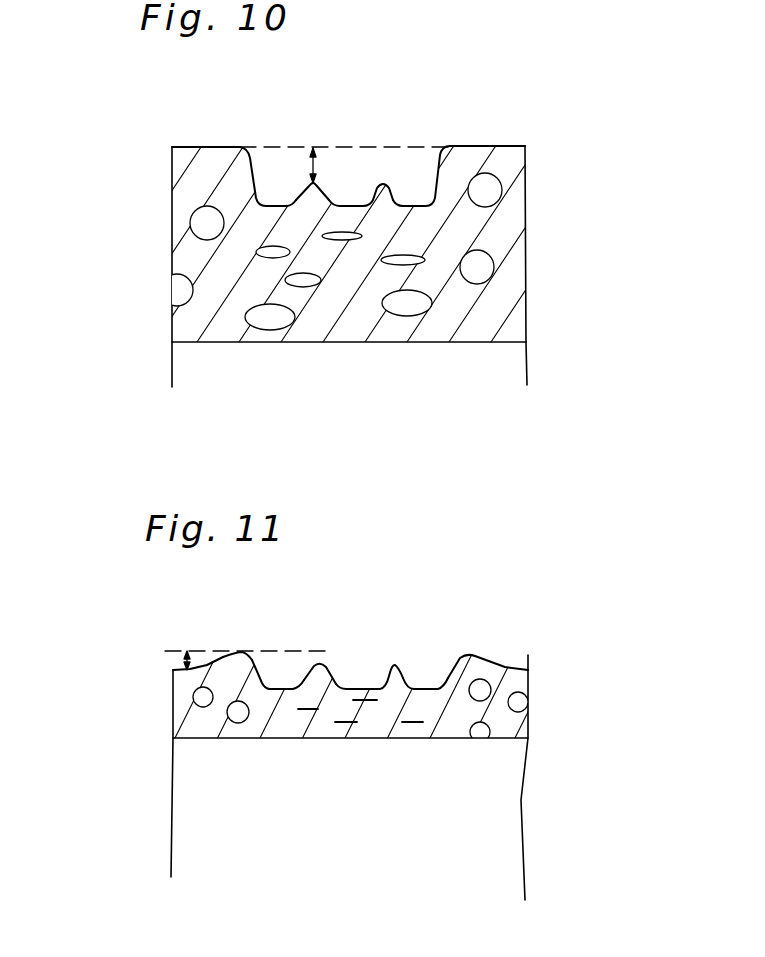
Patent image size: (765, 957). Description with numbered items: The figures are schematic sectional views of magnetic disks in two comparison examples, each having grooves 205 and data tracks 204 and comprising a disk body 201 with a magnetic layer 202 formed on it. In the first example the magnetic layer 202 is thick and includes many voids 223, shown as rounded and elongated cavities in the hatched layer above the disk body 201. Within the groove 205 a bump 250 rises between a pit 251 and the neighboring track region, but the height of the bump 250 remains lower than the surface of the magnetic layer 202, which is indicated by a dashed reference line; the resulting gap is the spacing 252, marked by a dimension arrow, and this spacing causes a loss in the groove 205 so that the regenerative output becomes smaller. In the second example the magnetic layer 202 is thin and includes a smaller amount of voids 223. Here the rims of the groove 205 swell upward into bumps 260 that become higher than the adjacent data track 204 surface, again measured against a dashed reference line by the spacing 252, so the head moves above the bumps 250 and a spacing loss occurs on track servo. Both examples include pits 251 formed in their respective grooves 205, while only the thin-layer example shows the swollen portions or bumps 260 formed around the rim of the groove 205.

In FIG. 10, the disk body 201 is at (185, 360).
In FIG. 11, the disk body 201 is at (193, 813).
In FIG. 10, the magnetic layer 202 is at (193, 172).
In FIG. 11, the magnetic layer 202 is at (193, 683).
In FIG. 10, the data track 204 is at (205, 150).
In FIG. 11, the data track 204 is at (193, 672).
In FIG. 10, the groove 205 is at (278, 168).
In FIG. 11, the groove 205 is at (363, 673).
In FIG. 10, the void 223 is at (285, 281).
In FIG. 11, the void 223 is at (300, 709).
In FIG. 10, the bump 250 is at (318, 198).
In FIG. 11, the bump 250 is at (321, 664).
In FIG. 10, the pit 251 is at (417, 193).
In FIG. 11, the pit 251 is at (427, 675).
In FIG. 10, the spacing 252 is at (315, 182).
In FIG. 11, the spacing 252 is at (177, 652).
In FIG. 11, the bump at rim of groove 260 is at (244, 653).